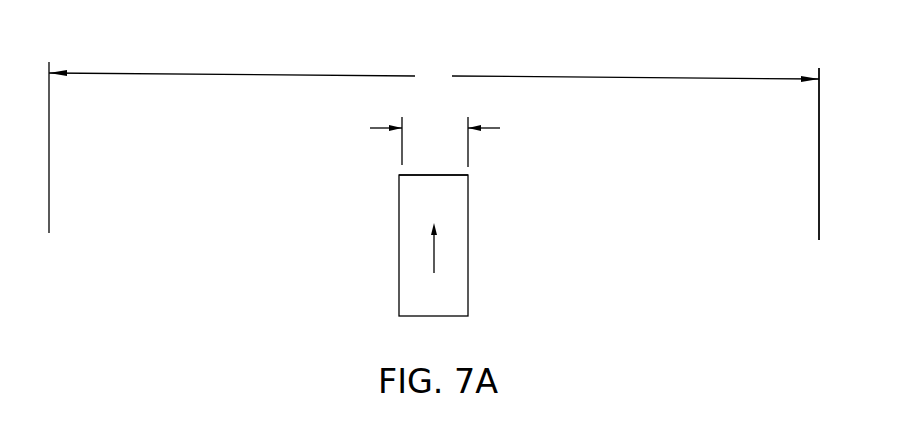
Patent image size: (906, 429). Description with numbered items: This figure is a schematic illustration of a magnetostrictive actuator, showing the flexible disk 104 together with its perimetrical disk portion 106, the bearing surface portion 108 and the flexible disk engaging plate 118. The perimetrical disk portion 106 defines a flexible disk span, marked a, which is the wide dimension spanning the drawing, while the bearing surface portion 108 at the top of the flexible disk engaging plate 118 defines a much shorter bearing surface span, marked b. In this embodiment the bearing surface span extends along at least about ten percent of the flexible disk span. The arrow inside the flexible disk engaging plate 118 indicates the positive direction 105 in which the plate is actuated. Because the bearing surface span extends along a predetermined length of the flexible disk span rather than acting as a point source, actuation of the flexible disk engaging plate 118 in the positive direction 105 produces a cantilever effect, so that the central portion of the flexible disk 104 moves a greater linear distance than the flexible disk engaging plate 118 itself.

The flexible disk 104 is at (638, 196).
The positive direction 105 is at (434, 257).
The perimetrical disk portion 106 is at (813, 247).
The bearing surface portion 108 is at (410, 171).
The flexible disk engaging plate 118 is at (399, 277).